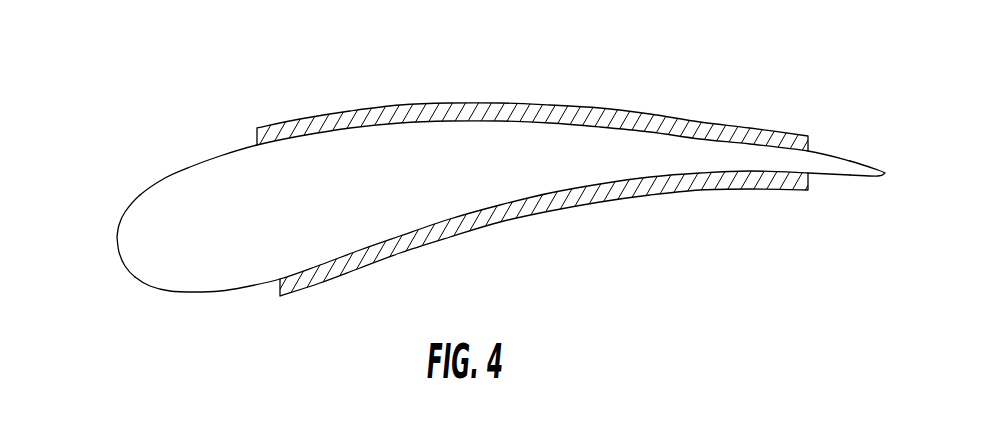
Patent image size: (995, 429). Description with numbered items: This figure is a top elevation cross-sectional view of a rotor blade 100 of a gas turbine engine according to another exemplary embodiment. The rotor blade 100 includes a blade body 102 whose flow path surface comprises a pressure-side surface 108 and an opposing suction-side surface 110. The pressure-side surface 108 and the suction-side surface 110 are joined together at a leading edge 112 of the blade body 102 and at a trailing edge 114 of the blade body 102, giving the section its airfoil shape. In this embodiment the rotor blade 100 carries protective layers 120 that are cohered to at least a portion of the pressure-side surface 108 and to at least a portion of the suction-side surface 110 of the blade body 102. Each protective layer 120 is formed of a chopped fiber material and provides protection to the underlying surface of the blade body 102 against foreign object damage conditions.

The rotor blade 100 is at (141, 84).
The blade body 102 is at (170, 240).
The pressure-side surface 108 is at (223, 292).
The suction-side surface 110 is at (205, 163).
The leading edge 112 is at (117, 230).
The trailing edge 114 is at (840, 158).
The protective layer 120 is at (550, 105).